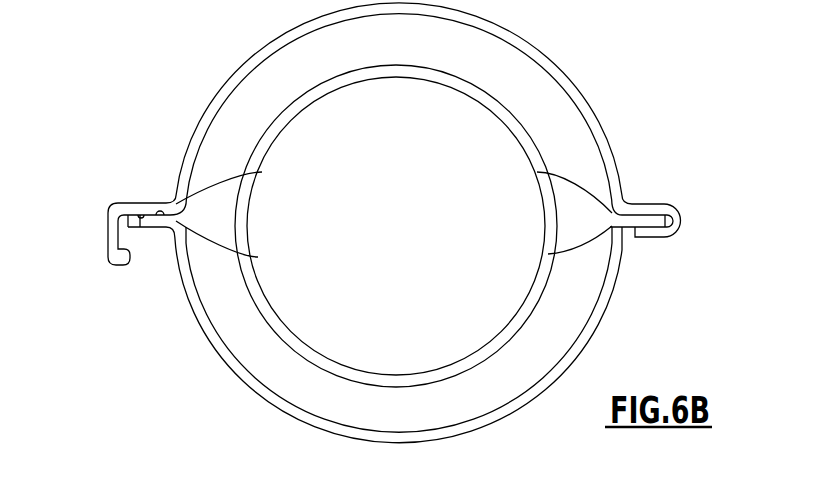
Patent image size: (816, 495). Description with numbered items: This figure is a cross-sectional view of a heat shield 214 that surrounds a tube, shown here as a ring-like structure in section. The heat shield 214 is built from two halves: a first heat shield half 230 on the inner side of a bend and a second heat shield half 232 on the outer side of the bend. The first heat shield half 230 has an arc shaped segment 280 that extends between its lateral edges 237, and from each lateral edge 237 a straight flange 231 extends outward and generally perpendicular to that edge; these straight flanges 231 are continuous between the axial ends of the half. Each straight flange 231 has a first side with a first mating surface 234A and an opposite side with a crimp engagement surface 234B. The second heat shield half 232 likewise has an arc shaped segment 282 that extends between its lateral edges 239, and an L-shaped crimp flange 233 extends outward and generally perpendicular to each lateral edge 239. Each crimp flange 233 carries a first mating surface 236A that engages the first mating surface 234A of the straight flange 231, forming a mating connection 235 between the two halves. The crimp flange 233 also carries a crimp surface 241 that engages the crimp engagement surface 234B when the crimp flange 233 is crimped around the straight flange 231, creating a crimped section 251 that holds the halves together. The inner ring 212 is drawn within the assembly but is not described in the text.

The heat shield 214 is at (178, 115).
The inner clamp ring 212 is at (290, 350).
The first heat shield half 230 is at (277, 413).
The second heat shield half 232 is at (237, 68).
The arc shaped segment 282 is at (433, 13).
The arc shaped segment 280 is at (385, 428).
The straight flange 231 is at (650, 222).
The crimp flange 233 is at (640, 207).
The crimped section 251 is at (690, 205).
The mating connection 235 is at (200, 216).
The lateral edge 237 is at (258, 257).
The lateral edge 239 is at (262, 172).
The first mating surface 236A is at (138, 214).
The crimp surface 241 is at (128, 262).
The first mating surface 234A is at (158, 227).
The crimp engagement surface 234B is at (140, 227).